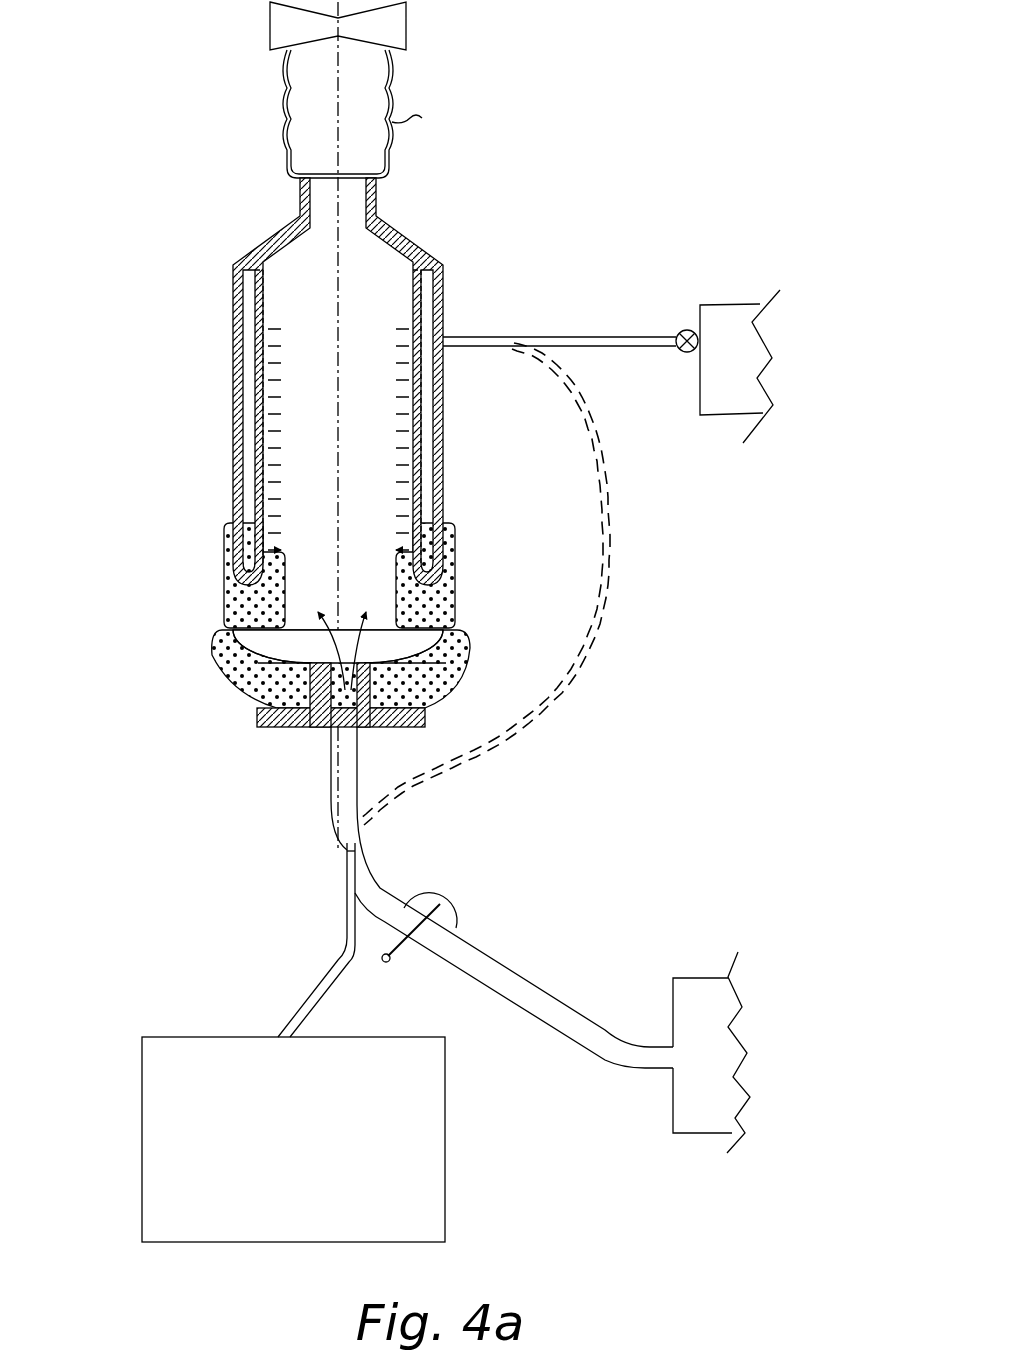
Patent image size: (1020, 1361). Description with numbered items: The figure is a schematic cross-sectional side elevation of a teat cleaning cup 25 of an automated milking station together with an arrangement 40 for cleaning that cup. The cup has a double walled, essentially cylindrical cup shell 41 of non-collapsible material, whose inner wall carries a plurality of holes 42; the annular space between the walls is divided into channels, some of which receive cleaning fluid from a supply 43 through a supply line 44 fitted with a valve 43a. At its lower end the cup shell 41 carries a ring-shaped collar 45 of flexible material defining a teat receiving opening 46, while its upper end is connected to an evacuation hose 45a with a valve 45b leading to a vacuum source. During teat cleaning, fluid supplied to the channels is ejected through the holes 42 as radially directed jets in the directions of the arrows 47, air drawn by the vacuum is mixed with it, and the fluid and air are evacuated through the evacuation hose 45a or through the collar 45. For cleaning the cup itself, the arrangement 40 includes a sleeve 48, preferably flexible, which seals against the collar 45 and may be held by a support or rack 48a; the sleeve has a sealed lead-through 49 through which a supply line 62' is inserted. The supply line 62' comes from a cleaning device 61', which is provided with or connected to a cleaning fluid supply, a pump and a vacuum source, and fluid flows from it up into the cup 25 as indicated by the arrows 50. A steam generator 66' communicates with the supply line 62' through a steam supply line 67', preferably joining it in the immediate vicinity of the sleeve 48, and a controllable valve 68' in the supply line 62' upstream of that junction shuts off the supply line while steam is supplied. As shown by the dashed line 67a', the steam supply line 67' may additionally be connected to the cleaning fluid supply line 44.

The teat cleaning cup 25 is at (170, 479).
The arrangement for cleaning the teat-cleaning cup 40 is at (222, 802).
The double walled cup shell 41 is at (445, 406).
The holes 42 is at (265, 446).
The supply of cleaning fluid 43 is at (700, 394).
The valve 43a is at (678, 329).
The supply line 44 is at (572, 335).
The ring-shaped collar 45 is at (456, 560).
The evacuation hose 45a is at (376, 114).
The valve 45b is at (408, 30).
The teat receiving opening 46 is at (403, 642).
The arrows 47 is at (273, 500).
The sleeve 48 is at (463, 680).
The support or rack 48a is at (425, 717).
The sealed lead-through 49 is at (352, 640).
The arrows 50 is at (330, 638).
The cleaning device 61' is at (706, 1025).
The supply line 62' is at (514, 897).
The steam generator 66' is at (293, 1097).
The steam supply line 67' is at (297, 940).
The dashed line 67a' is at (533, 584).
The controllable valve 68' is at (465, 901).